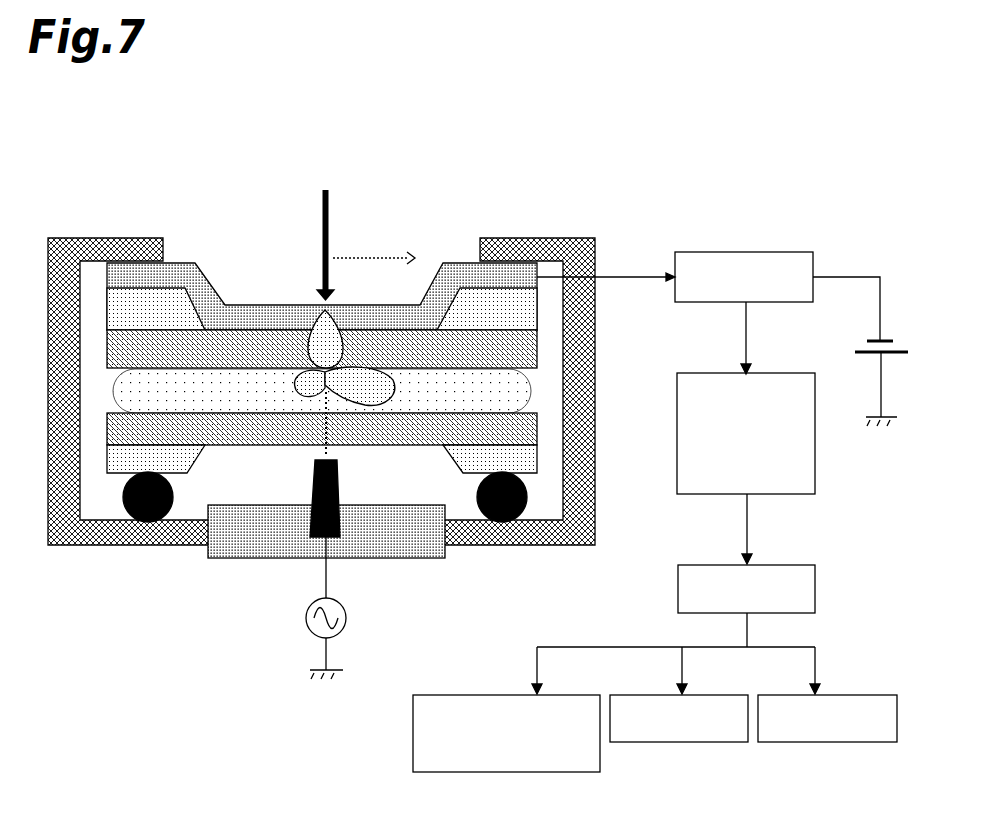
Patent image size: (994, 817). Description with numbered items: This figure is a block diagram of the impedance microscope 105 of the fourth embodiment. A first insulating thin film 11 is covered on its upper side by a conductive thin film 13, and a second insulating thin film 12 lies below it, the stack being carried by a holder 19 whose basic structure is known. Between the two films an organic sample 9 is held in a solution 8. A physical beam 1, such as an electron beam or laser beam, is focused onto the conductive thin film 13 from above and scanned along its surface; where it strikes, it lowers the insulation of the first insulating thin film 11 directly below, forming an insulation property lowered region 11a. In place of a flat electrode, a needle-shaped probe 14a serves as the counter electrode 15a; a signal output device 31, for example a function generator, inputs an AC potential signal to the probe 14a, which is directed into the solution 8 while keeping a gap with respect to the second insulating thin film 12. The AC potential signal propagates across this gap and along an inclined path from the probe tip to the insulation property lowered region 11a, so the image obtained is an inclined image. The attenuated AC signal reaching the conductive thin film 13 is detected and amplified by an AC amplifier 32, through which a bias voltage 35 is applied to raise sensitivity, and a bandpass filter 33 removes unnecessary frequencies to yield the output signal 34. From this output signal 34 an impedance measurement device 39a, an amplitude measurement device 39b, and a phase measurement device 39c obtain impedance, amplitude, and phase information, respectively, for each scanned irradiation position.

The physical beam 1 is at (320, 250).
The solution 8 is at (117, 393).
The organic sample 9 is at (397, 392).
The first insulating thin film 11 is at (108, 352).
The insulation property lowered region 11a is at (357, 345).
The second insulating thin film 12 is at (108, 427).
The conductive thin film 13 is at (247, 303).
The needle-shaped probe 14a is at (312, 478).
The counter electrode 15a is at (355, 472).
The holder 19 is at (80, 238).
The signal output device 31 is at (306, 624).
The AC amplifier 32 is at (731, 296).
The bandpass filter 33 is at (733, 451).
The output signal 34 is at (733, 607).
The bias voltage 35 is at (892, 357).
The impedance measurement device 39a is at (488, 749).
The amplitude measurement device 39b is at (660, 733).
The phase measurement device 39c is at (808, 733).
The impedance microscope 105 is at (668, 233).